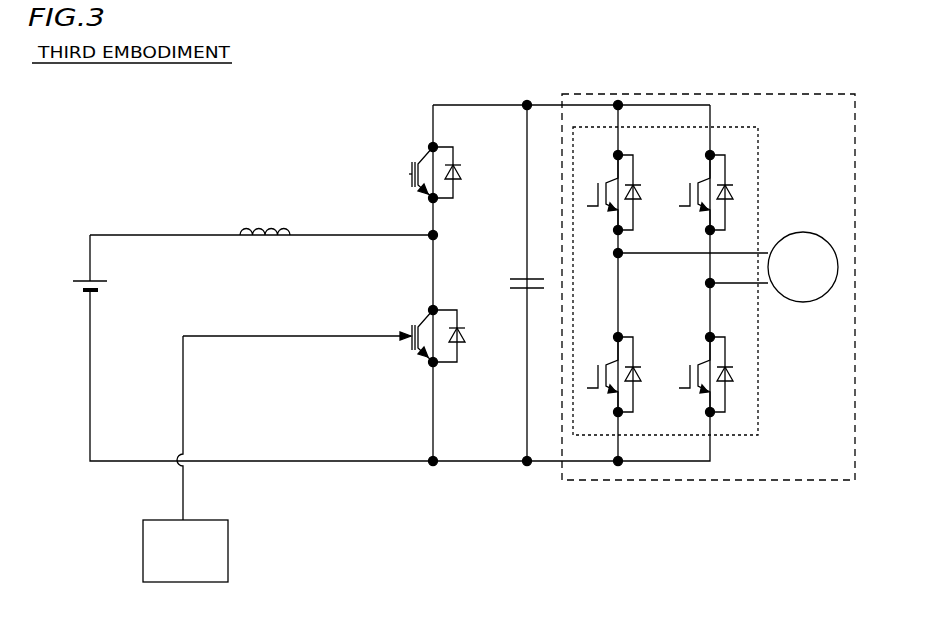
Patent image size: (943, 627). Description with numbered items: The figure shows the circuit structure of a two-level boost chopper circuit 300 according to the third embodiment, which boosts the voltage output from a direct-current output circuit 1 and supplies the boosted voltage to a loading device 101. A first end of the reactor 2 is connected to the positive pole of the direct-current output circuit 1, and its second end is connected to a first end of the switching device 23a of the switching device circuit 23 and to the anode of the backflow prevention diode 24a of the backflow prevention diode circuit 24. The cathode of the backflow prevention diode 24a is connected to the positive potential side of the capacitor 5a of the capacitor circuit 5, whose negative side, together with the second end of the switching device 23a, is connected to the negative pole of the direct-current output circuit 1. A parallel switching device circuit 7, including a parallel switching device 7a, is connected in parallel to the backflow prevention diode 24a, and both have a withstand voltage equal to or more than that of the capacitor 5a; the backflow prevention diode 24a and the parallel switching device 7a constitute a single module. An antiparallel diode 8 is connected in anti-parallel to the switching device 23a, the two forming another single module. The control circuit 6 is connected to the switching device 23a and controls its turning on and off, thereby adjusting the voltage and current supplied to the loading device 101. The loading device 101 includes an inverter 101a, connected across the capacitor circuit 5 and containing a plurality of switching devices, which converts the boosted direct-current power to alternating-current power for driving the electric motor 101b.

The boost chopper circuit 300 is at (88, 152).
The direct-current output circuit 1 is at (84, 280).
The reactor 2 is at (241, 229).
The parallel switching device circuit 7 is at (387, 173).
The parallel switching device 7a is at (409, 174).
The backflow prevention diode circuit 24 is at (477, 177).
The backflow prevention diode 24a is at (480, 184).
The capacitor circuit 5 is at (506, 283).
The capacitor 5a is at (520, 279).
The switching device circuit 23 is at (310, 299).
The switching device 23a is at (411, 334).
The antiparallel diode 8 is at (463, 343).
The control circuit 6 is at (143, 546).
The loading device 101 is at (722, 94).
The inverter 101a is at (759, 184).
The electric motor 101b is at (803, 230).